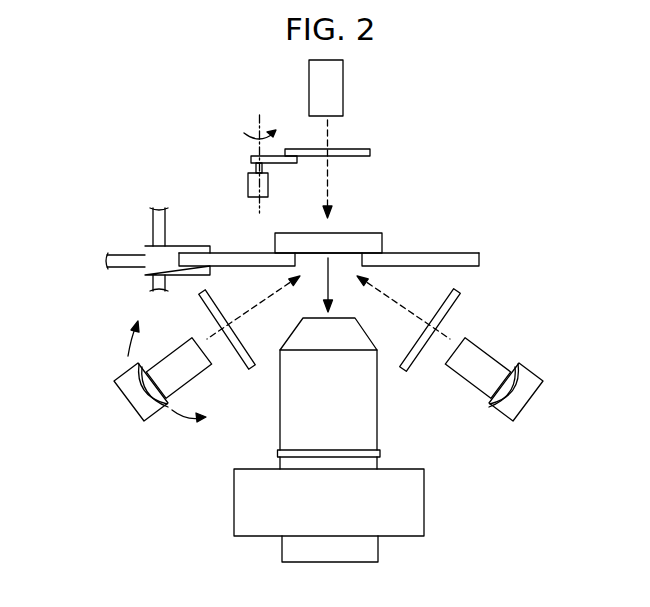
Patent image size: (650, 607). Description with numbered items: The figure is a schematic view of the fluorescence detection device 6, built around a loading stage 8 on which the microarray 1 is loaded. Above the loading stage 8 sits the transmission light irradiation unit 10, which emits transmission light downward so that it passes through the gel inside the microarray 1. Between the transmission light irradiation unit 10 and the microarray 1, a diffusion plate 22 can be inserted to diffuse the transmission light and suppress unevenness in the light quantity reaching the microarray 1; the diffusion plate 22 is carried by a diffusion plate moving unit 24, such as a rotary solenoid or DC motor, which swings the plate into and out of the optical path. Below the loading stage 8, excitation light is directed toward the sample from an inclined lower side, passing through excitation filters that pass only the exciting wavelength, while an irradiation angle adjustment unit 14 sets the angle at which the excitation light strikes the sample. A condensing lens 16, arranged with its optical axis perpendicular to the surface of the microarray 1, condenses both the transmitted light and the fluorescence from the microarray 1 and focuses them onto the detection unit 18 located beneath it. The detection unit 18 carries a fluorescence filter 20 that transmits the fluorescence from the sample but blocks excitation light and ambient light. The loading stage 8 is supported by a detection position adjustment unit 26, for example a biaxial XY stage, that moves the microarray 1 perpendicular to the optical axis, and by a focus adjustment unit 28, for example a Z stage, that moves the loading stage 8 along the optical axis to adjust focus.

The microarray 1 is at (368, 242).
The fluorescence detection device 6 is at (466, 106).
The loading stage 8 is at (470, 260).
The transmission light irradiation unit 10 is at (335, 83).
The irradiation angle adjustment unit 14 is at (113, 380).
The condensing lens 16 is at (300, 413).
The detection unit 18 is at (253, 500).
The fluorescence filter 20 is at (380, 453).
The diffusion plate 22 is at (363, 149).
The diffusion plate moving unit 24 is at (253, 182).
The detection position adjustment unit 26 is at (150, 247).
The focus adjustment unit 28 is at (159, 249).